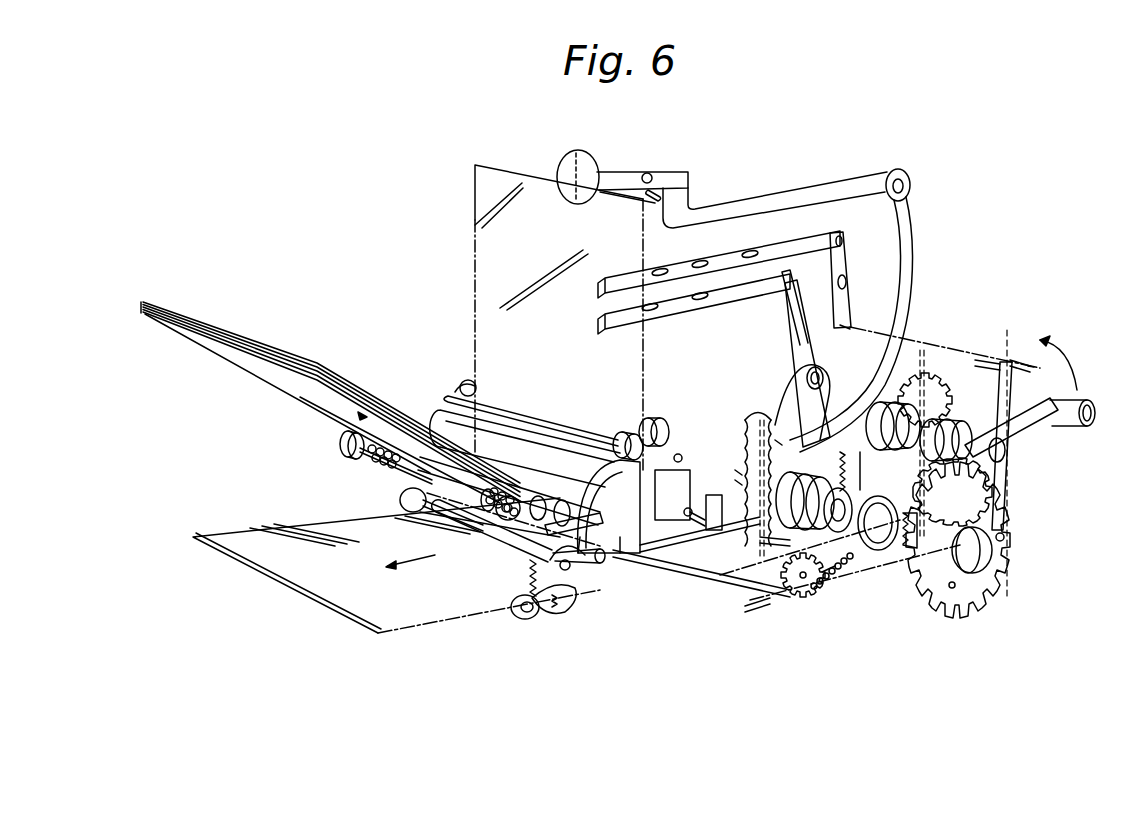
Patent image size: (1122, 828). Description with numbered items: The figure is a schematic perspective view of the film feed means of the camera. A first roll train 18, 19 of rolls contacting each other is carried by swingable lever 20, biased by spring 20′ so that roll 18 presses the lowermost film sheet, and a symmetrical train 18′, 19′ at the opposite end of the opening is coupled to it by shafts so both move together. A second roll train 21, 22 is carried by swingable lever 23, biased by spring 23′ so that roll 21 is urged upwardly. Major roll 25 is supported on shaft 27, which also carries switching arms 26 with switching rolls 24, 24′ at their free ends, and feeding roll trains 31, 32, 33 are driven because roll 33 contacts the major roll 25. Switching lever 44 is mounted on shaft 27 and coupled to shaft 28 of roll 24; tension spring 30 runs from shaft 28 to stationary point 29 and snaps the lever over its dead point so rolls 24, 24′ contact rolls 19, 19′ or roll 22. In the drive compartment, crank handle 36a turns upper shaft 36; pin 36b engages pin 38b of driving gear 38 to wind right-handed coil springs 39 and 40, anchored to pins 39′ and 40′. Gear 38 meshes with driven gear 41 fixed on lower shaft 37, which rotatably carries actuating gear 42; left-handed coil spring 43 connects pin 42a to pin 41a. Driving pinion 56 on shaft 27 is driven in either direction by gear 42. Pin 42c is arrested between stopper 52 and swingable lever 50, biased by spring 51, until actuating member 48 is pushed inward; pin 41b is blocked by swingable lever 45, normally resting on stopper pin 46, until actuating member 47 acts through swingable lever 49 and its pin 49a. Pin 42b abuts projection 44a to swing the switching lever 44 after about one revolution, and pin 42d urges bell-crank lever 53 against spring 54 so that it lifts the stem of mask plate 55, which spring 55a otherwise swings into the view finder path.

The roll 18 is at (520, 470).
The roll 18′ is at (342, 441).
The roll 19 is at (532, 455).
The roll 19′ is at (370, 460).
The swingable lever 20 is at (517, 528).
The spring 20′ is at (512, 432).
The roll 21 is at (524, 620).
The roll 22 is at (572, 588).
The swingable lever 23 is at (560, 612).
The spring 23′ is at (528, 579).
The switching roll 24 is at (512, 496).
The switching roll 24′ is at (400, 472).
The major roll 25 is at (448, 407).
The switching arm 26 is at (645, 540).
The shaft 27 is at (650, 468).
The shaft 28 is at (790, 598).
The stationary point 29 is at (853, 557).
The tension spring 30 is at (830, 575).
The roll 31 is at (664, 425).
The roll 32 is at (620, 440).
The roll 33 is at (600, 477).
The upper shaft 36 is at (1010, 480).
The crank handle 36a is at (1050, 424).
The pin 36b is at (962, 416).
The lower shaft 37 is at (990, 599).
The driving gear 38 is at (893, 402).
The pin 38b is at (945, 414).
The right-handed coil spring 39 is at (824, 380).
The pin 39′ is at (806, 380).
The right-handed coil spring 40 is at (917, 470).
The pin 40′ is at (990, 496).
The driven gear 41 is at (945, 615).
The pin 41a is at (900, 552).
The pin 41b is at (1003, 537).
The actuating gear 42 is at (748, 452).
The pin 42a is at (735, 470).
The pin 42b is at (688, 514).
The pin 42c is at (735, 480).
The pin 42d is at (775, 440).
The left-handed coil spring 43 is at (852, 468).
The switching lever 44 is at (705, 555).
The projection 44a is at (688, 508).
The swingable lever 45 is at (1010, 470).
The stopper pin 46 is at (990, 371).
The actuating member 47 is at (738, 255).
The actuating member 48 is at (720, 300).
The swingable lever 49 is at (848, 256).
The pin 49a is at (990, 350).
The swingable lever 50 is at (770, 322).
The spring 51 is at (815, 360).
The stopper 52 is at (712, 496).
The lever 53 is at (800, 207).
The spring 54 is at (888, 176).
The mask plate 55 is at (585, 156).
The spring 55a is at (643, 176).
The driving pinion 56 is at (760, 590).